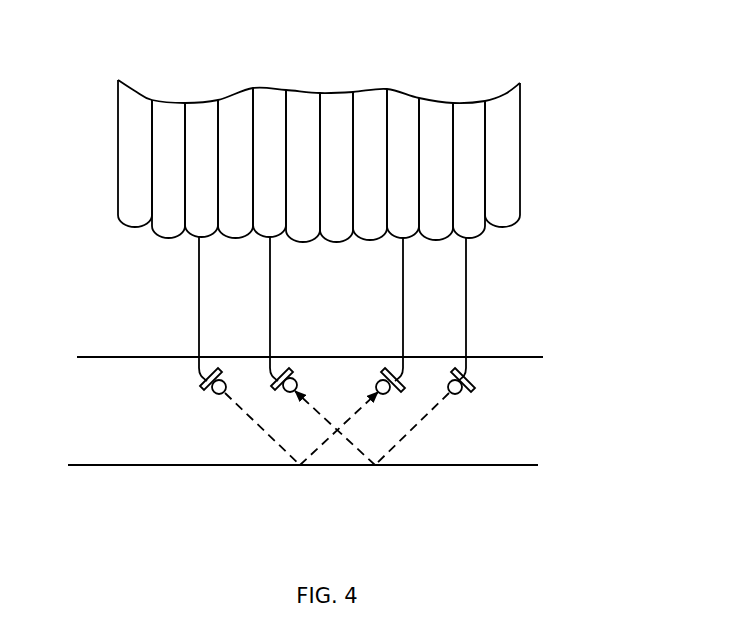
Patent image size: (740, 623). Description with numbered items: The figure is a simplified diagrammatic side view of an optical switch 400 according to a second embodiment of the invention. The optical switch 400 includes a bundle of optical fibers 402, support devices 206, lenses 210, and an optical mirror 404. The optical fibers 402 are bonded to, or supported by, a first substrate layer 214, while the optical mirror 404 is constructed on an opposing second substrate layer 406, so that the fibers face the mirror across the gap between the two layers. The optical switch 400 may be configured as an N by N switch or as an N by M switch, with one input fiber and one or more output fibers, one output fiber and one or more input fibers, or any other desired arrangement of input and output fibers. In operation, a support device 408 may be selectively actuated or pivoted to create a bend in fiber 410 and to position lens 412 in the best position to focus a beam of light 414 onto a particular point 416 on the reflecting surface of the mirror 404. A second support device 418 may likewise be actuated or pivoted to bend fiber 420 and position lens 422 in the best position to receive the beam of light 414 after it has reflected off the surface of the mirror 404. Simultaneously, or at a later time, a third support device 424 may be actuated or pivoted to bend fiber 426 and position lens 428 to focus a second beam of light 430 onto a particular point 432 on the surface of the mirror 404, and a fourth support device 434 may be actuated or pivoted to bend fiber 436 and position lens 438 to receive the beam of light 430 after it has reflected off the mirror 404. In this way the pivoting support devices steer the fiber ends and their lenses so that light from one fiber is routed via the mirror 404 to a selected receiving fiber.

The optical switch 400 is at (632, 68).
The optical fibers 402 is at (524, 140).
The first substrate layer 214 is at (98, 356).
The optical mirror 404 is at (530, 464).
The second substrate layer 406 is at (487, 467).
The fiber 410 is at (199, 293).
The fiber 436 is at (270, 293).
The fiber 420 is at (403, 293).
The fiber 426 is at (466, 293).
The support device 408 is at (199, 386).
The lens 412 is at (213, 395).
The fourth support device 434 is at (273, 385).
The lens 438 is at (292, 377).
The second support device 418 is at (388, 368).
The lens 422 is at (376, 387).
The third support device 424 is at (455, 368).
The lens 428 is at (448, 385).
The support devices 206 is at (481, 382).
The lenses 210 is at (470, 396).
The beam of light 414 is at (270, 434).
The point 416 is at (301, 466).
The second beam of light 430 is at (412, 430).
The point 432 is at (373, 466).